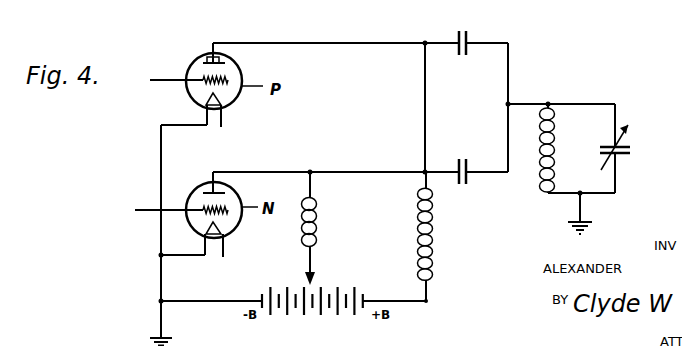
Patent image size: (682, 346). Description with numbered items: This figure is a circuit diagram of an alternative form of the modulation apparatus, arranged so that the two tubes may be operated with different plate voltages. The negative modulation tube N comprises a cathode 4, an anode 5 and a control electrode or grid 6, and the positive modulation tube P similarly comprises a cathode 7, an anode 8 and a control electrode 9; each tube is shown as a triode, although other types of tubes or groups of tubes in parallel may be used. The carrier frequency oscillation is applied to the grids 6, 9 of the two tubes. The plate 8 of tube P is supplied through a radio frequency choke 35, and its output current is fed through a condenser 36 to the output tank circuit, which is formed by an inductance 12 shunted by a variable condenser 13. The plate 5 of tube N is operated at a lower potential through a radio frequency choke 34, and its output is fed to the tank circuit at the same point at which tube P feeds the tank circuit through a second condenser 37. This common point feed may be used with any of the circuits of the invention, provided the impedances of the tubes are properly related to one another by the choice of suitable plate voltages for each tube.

The cathode 4 is at (236, 233).
The anode 5 is at (218, 193).
The control electrode or grid 6 is at (230, 213).
The cathode 7 is at (235, 99).
The anode 8 is at (200, 56).
The control electrode 9 is at (228, 80).
The inductance 12 is at (540, 179).
The variable condenser 13 is at (622, 158).
The radio frequency choke 34 is at (318, 228).
The radio frequency choke 35 is at (434, 235).
The condenser 36 is at (468, 40).
The coupling condenser 37 is at (468, 166).